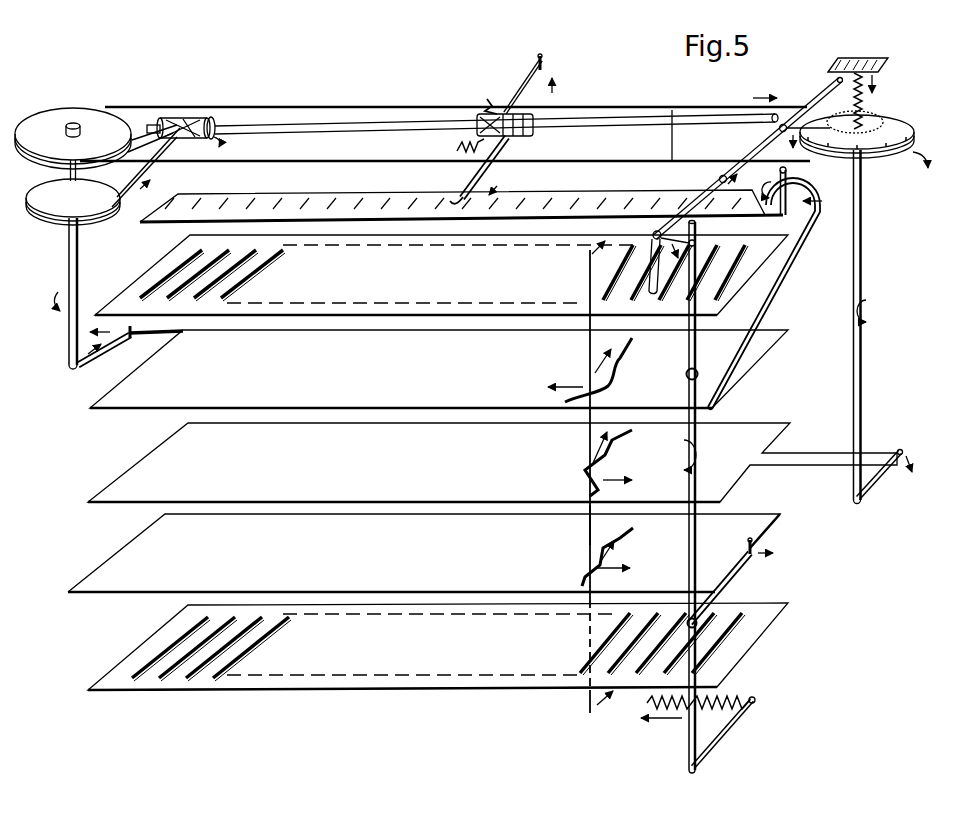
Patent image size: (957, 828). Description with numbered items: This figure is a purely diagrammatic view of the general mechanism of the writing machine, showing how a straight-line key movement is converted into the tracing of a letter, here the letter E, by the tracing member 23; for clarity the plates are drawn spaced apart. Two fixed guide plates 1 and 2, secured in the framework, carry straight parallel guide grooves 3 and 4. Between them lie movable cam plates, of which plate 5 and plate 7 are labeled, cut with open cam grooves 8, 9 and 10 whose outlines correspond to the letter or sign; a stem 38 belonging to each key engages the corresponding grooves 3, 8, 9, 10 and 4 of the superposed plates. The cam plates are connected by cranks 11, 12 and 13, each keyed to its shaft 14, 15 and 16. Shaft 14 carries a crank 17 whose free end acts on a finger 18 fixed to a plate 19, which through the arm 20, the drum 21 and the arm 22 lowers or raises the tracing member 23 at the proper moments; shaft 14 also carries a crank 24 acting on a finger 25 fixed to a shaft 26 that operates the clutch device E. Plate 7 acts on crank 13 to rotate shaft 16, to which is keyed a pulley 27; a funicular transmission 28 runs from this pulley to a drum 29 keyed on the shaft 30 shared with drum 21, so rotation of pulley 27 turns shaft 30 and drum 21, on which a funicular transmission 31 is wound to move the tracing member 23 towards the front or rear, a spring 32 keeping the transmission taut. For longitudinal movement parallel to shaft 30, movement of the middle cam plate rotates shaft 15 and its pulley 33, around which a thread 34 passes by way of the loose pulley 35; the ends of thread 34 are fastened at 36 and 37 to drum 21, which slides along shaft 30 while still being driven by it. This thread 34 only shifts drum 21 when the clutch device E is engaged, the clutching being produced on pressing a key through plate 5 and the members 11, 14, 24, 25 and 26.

The guide plate 1 is at (485, 668).
The guide plate 2 is at (348, 253).
The guide groove 3 is at (240, 662).
The guide groove 4 is at (266, 255).
The cam plate 5 is at (762, 518).
The cam plate 7 is at (768, 338).
The cam groove 8 is at (627, 537).
The cam groove 9 is at (620, 452).
The cam groove 10 is at (626, 346).
The crank 11 is at (733, 573).
The crank 12 is at (882, 478).
The crank 13 is at (79, 370).
The shaft 14 is at (700, 675).
The shaft 15 is at (864, 375).
The shaft 16 is at (67, 275).
The crank 17 is at (795, 244).
The finger 18 is at (789, 175).
The plate 19 is at (613, 200).
The arm 20 is at (486, 171).
The drum 21 is at (534, 131).
The arm 22 is at (523, 91).
The tracing member 23 is at (545, 64).
The crank 24 is at (693, 266).
The finger 25 is at (640, 263).
The shaft 26 is at (758, 149).
The pulley 27 is at (42, 197).
The funicular transmission 28 is at (147, 173).
The drum 29 is at (164, 118).
The shaft 30 is at (294, 121).
The funicular transmission 31 is at (545, 85).
The spring 32 is at (457, 148).
The pulley 33 is at (893, 131).
The thread 34 is at (672, 112).
The loose pulley 35 is at (45, 118).
The attachment point 36 is at (478, 96).
The attachment point 37 is at (513, 113).
The stem 38 is at (590, 523).
The clutch device E is at (873, 108).